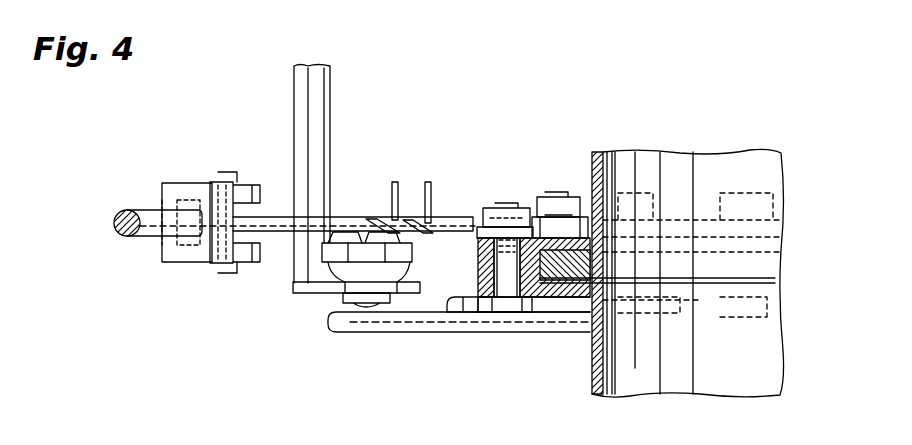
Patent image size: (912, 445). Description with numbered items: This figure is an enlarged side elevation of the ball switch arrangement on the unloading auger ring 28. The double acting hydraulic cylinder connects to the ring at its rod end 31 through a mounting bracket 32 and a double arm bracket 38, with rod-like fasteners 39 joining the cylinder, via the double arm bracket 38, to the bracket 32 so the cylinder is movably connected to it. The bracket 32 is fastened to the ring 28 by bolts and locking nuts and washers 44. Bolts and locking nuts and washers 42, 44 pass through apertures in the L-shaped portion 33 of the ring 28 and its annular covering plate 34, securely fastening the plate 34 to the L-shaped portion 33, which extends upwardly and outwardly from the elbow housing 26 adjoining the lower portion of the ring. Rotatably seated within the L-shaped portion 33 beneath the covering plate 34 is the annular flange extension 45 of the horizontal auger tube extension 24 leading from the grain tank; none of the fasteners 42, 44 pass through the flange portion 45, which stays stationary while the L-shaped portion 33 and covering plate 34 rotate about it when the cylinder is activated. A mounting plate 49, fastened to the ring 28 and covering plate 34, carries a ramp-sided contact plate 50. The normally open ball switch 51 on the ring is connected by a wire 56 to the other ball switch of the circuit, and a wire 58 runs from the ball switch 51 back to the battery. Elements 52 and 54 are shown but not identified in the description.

The horizontal auger tube extension 24 is at (731, 152).
The elbow housing 26 is at (600, 393).
The unloading auger ring 28 is at (540, 346).
The rod end 31 is at (142, 206).
The mounting bracket 32 is at (287, 216).
The L-shaped portion 33 is at (478, 272).
The annular covering plate 34 is at (480, 240).
The double arm bracket 38 is at (182, 183).
The rod-like fasteners 39 is at (227, 172).
The bolts and locking nuts and washers 42 is at (505, 208).
The bolts and locking nuts and washers 44 is at (558, 194).
The annular flange extension 45 is at (640, 278).
The mounting plate 49 is at (452, 332).
The contact plate 50 is at (383, 334).
The ball switch 51 is at (338, 264).
The column 52 is at (294, 68).
The pad 54 is at (340, 307).
The wire 56 is at (393, 182).
The wire 58 is at (428, 182).